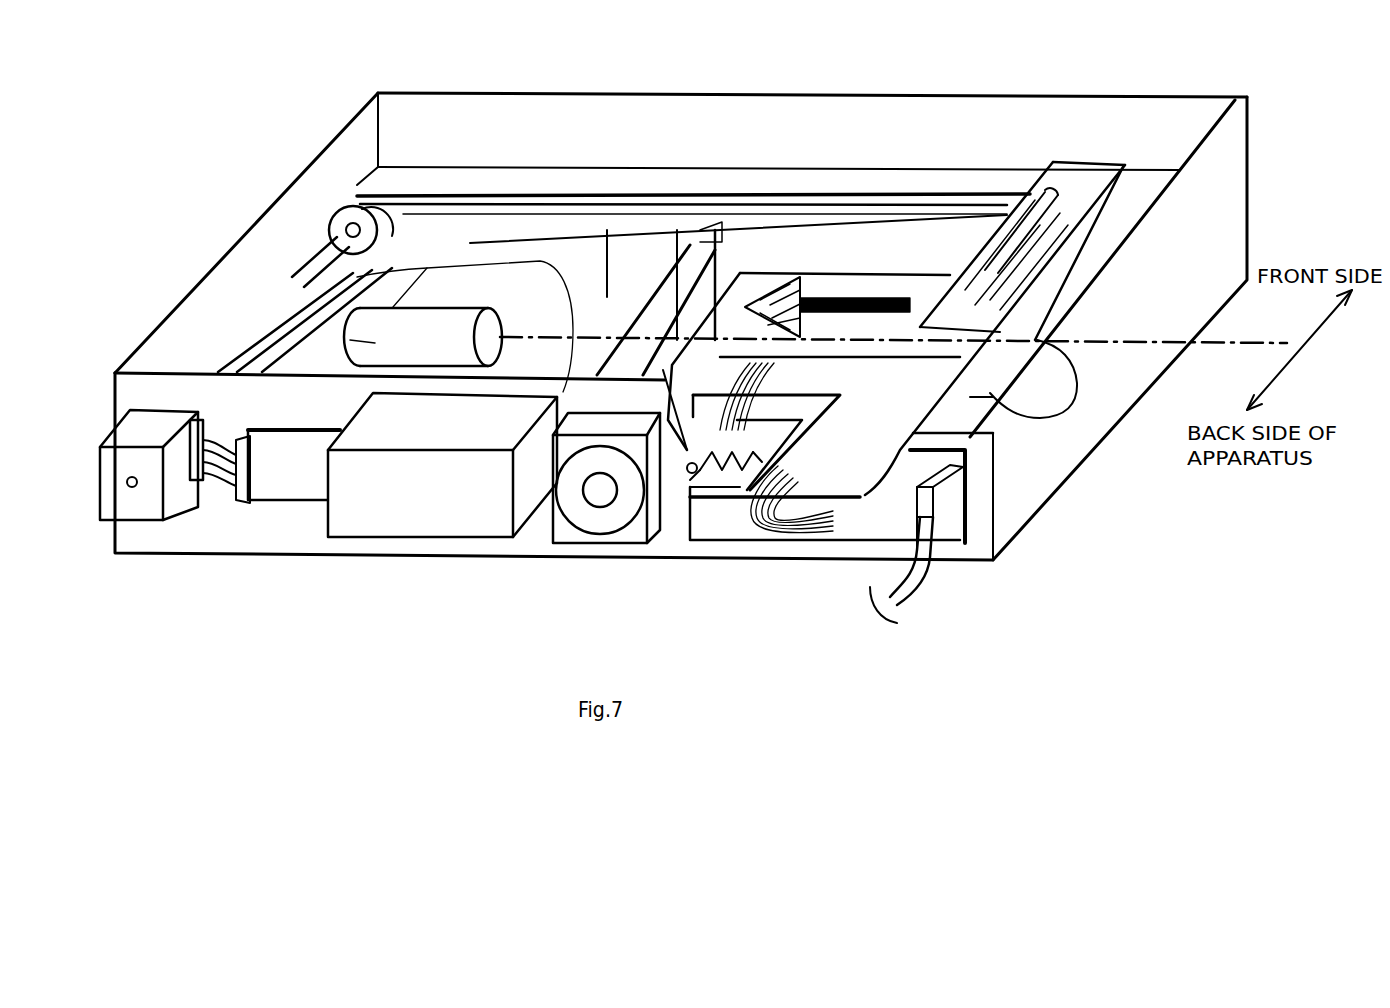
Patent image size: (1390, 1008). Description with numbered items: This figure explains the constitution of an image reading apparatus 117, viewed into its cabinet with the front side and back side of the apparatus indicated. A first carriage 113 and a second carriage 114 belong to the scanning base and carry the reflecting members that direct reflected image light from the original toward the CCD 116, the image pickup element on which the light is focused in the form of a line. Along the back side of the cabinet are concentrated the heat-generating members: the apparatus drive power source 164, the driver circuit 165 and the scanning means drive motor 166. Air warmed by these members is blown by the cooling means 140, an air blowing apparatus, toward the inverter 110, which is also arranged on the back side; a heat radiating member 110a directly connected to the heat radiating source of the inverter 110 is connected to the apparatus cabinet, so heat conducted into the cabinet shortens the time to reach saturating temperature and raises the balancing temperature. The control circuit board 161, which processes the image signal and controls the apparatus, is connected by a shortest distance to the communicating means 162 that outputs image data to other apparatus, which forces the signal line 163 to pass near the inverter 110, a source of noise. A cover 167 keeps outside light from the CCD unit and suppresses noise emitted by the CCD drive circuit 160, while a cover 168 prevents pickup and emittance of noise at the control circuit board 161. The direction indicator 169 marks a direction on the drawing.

The inverter 110 is at (767, 450).
The heat radiating member 110a is at (743, 457).
The first carriage 113 is at (1077, 183).
The second carriage 114 is at (970, 397).
The CCD 116 is at (320, 280).
The image reading apparatus 117 is at (1100, 350).
The cooling means 140 is at (570, 490).
The CCD drive circuit 160 is at (350, 340).
The control circuit board 161 is at (843, 447).
The communicating means 162 is at (945, 520).
The signal line 163 is at (778, 537).
The apparatus drive power source 164 is at (443, 487).
The driver circuit 165 is at (293, 473).
The scanning means drive motor 166 is at (113, 477).
The cover 167 is at (607, 297).
The cover 168 is at (888, 290).
The direction indicator 169 is at (713, 223).